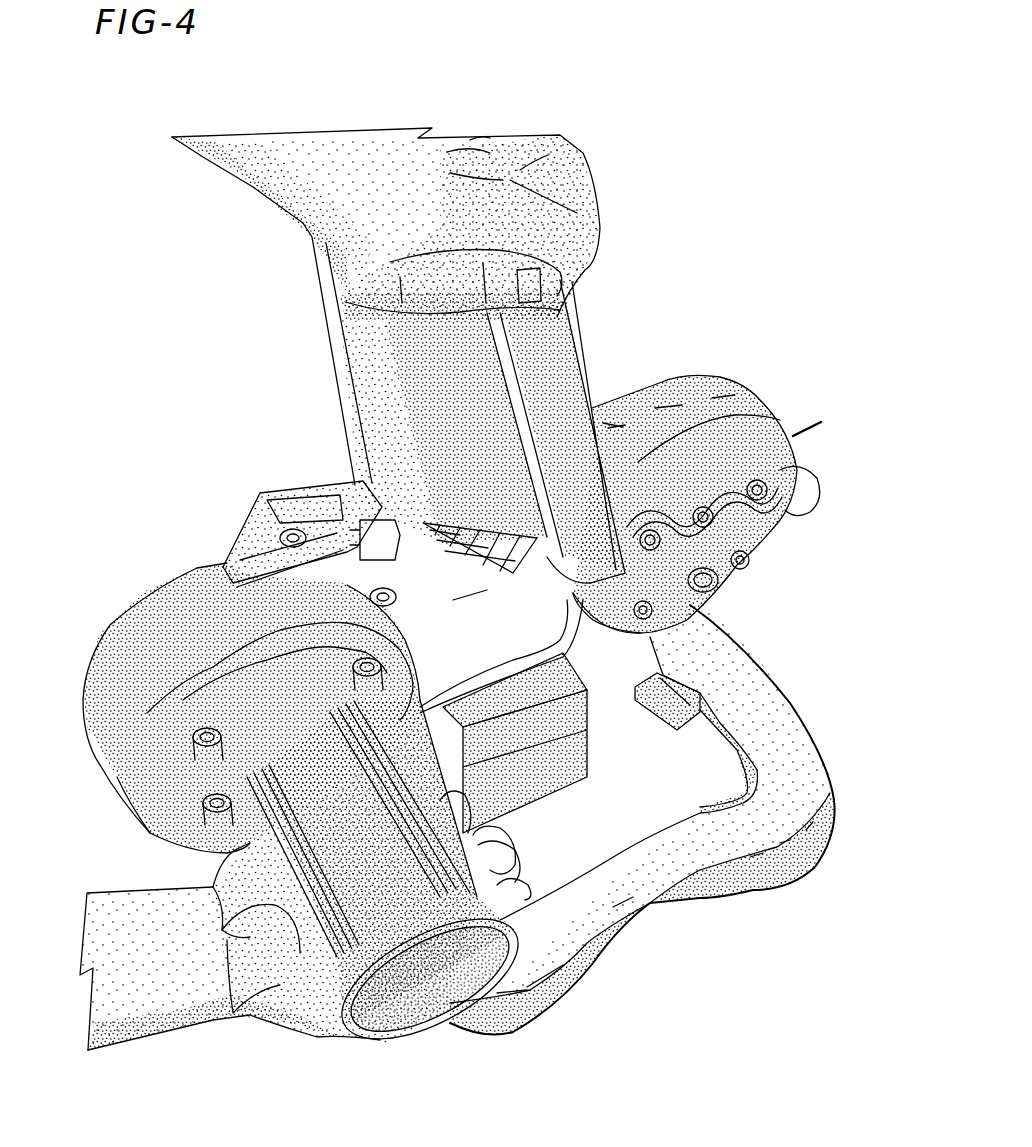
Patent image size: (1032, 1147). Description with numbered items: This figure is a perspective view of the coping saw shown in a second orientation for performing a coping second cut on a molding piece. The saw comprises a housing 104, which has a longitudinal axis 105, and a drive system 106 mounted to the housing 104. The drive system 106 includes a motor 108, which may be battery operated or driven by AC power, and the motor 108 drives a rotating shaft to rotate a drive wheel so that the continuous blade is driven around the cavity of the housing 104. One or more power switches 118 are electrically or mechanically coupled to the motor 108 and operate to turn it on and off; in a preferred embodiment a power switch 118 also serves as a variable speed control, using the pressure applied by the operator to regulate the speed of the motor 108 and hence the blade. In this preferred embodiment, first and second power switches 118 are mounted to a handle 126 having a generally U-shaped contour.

The housing 104 is at (177, 613).
The longitudinal axis 105 is at (100, 787).
The drive system 106 is at (174, 857).
The motor 108 is at (363, 874).
The power switch 118 is at (670, 705).
The handle 126 is at (597, 913).